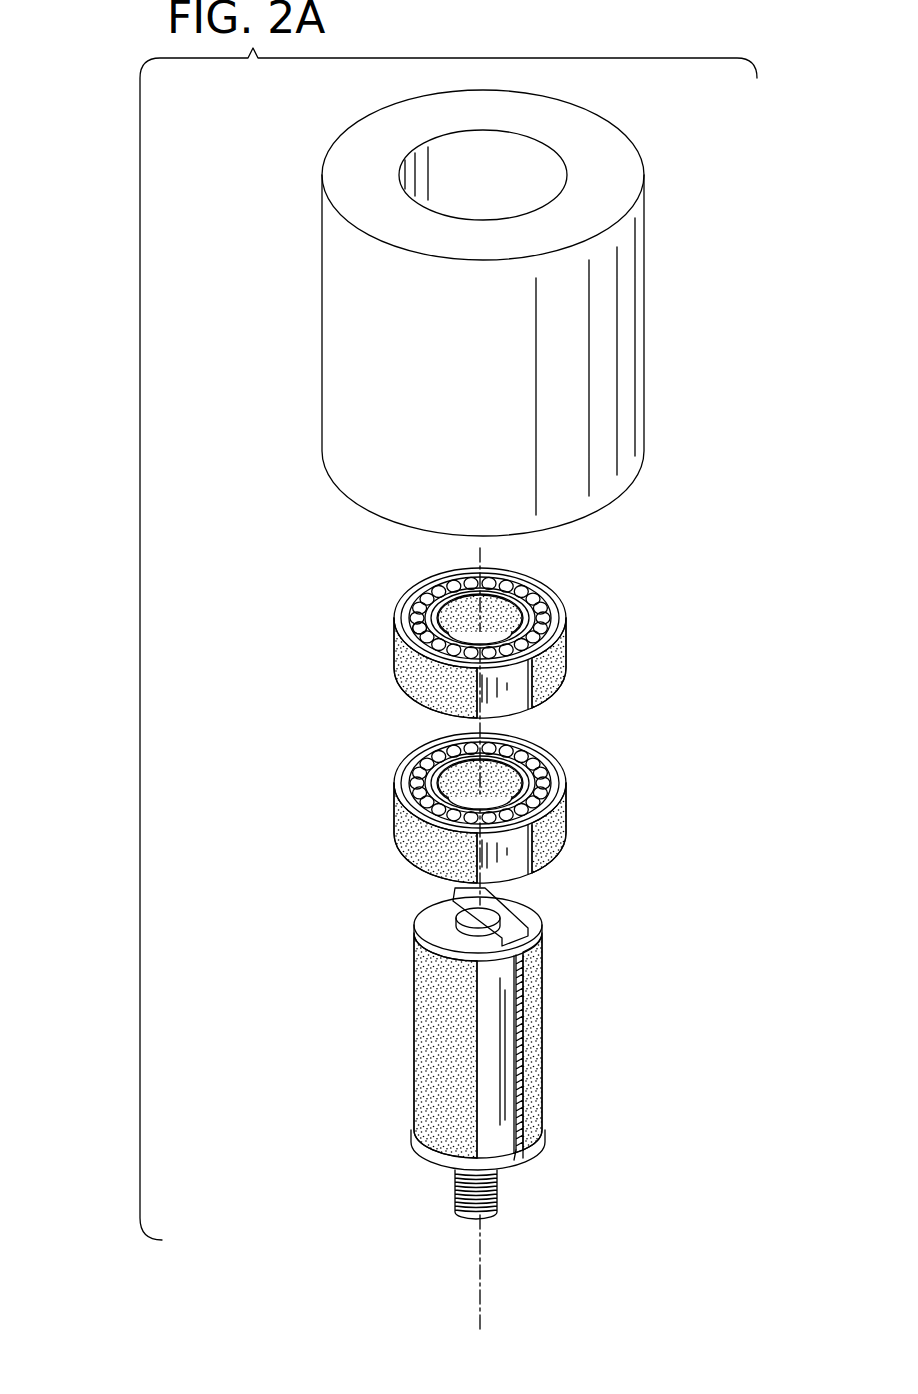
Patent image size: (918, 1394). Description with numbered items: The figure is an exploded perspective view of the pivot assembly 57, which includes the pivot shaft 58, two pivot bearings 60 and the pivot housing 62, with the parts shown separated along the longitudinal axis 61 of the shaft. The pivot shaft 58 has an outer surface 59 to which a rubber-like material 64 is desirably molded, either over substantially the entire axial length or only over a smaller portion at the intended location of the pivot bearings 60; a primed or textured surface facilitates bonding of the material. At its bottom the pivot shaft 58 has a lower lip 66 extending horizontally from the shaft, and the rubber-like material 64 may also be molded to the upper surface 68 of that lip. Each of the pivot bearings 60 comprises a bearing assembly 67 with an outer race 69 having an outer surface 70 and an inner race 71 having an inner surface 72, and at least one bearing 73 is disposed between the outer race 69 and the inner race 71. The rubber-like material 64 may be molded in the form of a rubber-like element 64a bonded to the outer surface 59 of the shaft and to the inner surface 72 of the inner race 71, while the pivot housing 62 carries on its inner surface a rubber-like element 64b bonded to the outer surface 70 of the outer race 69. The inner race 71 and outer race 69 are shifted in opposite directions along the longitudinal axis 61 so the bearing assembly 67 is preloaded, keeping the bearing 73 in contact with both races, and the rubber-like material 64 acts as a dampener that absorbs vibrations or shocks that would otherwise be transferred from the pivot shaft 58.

The pivot assembly 57 is at (142, 597).
The pivot shaft 58 is at (398, 1040).
The outer surface 59 is at (495, 992).
The pivot bearings 60 is at (390, 760).
The longitudinal axis 61 is at (480, 1267).
The pivot housing 62 is at (660, 331).
The rubber-like material 64 is at (560, 665).
The rubber-like element 64a is at (512, 626).
The rubber-like element 64b is at (400, 660).
The lower lip 66 is at (432, 1158).
The bearing assembly 67 is at (522, 568).
The upper surface 68 is at (510, 1150).
The outer race 69 is at (557, 617).
The outer surface 70 is at (505, 700).
The inner race 71 is at (430, 607).
The inner surface 72 is at (553, 612).
The bearing 73 is at (410, 625).